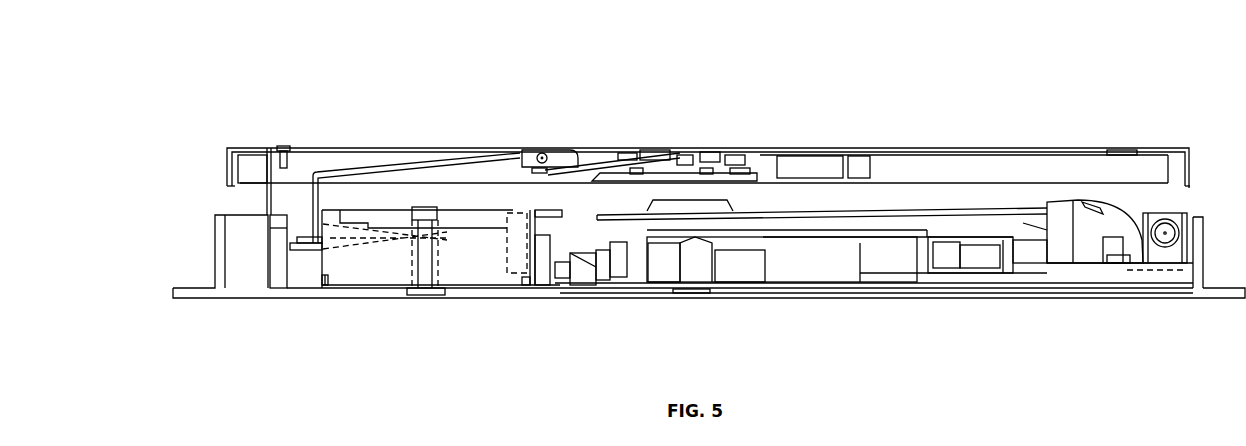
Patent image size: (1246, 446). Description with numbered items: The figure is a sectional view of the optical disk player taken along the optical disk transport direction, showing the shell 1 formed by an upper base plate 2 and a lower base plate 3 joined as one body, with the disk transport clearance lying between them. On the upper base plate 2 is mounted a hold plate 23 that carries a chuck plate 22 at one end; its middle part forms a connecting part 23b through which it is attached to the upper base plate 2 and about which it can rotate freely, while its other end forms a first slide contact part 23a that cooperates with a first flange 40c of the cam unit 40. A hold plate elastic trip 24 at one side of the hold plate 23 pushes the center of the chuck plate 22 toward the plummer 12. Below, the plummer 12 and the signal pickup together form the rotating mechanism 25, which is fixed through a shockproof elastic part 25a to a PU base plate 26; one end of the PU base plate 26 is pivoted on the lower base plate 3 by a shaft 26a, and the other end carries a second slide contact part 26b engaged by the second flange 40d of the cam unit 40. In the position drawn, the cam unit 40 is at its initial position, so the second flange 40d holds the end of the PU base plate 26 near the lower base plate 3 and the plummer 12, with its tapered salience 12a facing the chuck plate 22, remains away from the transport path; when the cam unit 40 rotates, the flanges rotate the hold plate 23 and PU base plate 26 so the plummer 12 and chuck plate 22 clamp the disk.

The shell 1 is at (1139, 138).
The upper base plate 2 is at (999, 151).
The lower base plate 3 is at (1237, 302).
The plummer 12 is at (770, 213).
The tapered salience 12a is at (733, 208).
The chuck plate 22 is at (793, 153).
The hold plate 23 is at (492, 153).
The first slide contact part 23a is at (322, 272).
The connecting part 23b is at (545, 147).
The hold plate elastic trip 24 is at (680, 152).
The rotating mechanism 25 is at (872, 290).
The shockproof elastic part 25a is at (588, 282).
The PU base plate 26 is at (1033, 290).
The shaft 26a is at (1167, 250).
The second slide contact part 26b is at (507, 252).
The cam unit 40 is at (322, 272).
The first flange 40c is at (282, 246).
The second flange 40d is at (522, 300).